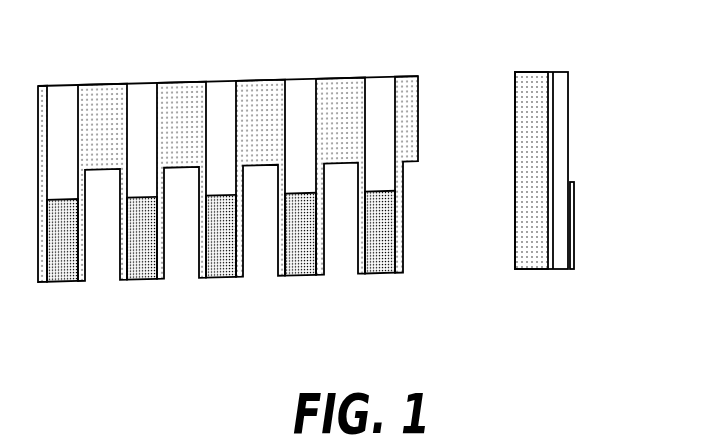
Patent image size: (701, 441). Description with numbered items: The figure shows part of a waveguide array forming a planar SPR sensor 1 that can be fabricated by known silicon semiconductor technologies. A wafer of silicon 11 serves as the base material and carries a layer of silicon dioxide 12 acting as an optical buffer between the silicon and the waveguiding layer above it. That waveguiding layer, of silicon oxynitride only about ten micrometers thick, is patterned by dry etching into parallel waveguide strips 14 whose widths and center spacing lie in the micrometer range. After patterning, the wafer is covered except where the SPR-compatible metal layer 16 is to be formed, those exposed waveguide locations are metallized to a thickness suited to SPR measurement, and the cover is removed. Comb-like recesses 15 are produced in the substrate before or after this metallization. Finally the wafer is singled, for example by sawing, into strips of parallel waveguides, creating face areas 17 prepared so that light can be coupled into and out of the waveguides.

The planar SPR sensor 1 is at (351, 182).
The wafer of silicon 11 is at (228, 81).
The layer of SiO2 12 is at (228, 179).
The waveguide strips 14 is at (142, 238).
The comb-like recesses 15 is at (300, 234).
The SPR-compatible metal layer 16 is at (380, 232).
The face areas 17 is at (62, 240).